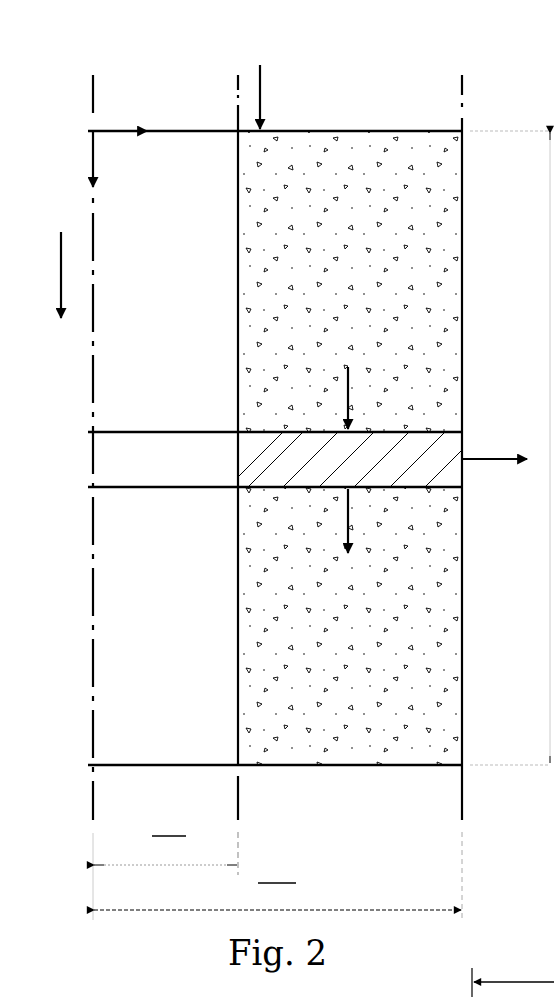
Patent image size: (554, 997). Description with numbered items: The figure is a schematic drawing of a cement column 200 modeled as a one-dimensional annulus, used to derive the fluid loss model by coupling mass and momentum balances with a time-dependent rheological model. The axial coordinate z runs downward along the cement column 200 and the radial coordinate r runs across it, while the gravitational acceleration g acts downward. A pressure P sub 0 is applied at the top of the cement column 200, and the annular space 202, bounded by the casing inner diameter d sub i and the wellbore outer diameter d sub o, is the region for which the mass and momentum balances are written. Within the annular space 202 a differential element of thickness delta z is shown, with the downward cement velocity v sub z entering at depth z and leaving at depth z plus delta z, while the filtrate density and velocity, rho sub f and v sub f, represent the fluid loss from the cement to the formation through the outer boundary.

The cement column 200 is at (220, 76).
The annular space 202 is at (350, 140).
The inlet pressure p0 arrow 0 is at (275, 97).